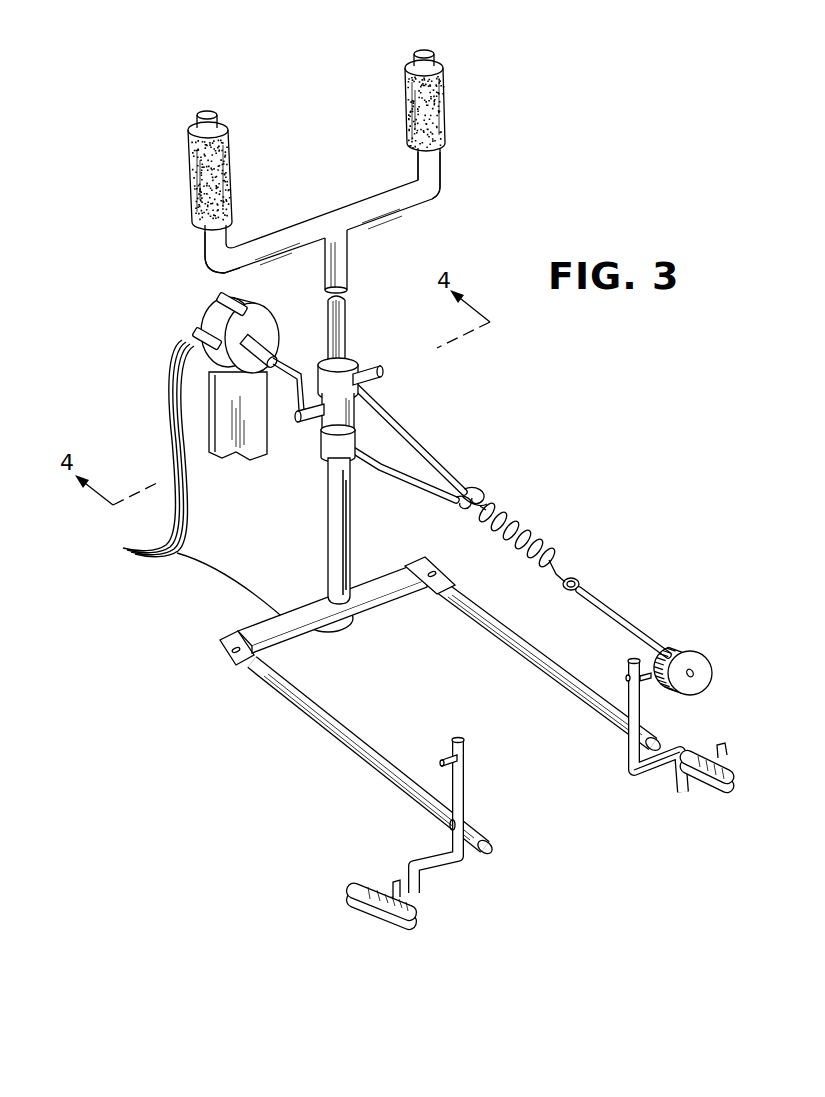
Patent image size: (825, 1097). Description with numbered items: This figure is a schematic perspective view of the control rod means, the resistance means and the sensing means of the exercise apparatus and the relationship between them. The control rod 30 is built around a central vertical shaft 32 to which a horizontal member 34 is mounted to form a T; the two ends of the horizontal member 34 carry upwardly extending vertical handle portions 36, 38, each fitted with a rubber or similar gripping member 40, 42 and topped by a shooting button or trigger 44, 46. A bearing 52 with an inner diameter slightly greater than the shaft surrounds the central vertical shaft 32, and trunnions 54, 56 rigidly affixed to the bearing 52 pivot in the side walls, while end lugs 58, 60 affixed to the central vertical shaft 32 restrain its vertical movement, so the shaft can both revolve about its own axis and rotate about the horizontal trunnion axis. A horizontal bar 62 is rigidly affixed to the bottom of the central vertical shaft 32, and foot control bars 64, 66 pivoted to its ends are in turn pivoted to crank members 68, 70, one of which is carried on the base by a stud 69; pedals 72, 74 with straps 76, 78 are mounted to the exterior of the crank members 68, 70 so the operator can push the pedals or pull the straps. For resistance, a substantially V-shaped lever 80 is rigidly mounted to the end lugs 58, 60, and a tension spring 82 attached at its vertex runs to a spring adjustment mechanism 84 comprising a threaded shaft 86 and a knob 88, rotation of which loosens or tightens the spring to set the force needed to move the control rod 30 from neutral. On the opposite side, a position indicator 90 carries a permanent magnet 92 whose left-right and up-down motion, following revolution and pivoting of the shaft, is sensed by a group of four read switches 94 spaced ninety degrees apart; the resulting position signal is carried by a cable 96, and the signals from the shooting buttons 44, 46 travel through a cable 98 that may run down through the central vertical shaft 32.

The control rod 30 is at (360, 238).
The central vertical shaft 32 is at (344, 323).
The horizontal member 34 is at (365, 213).
The vertical handle portion 36 is at (207, 244).
The vertical handle portion 38 is at (425, 168).
The gripping member 40 is at (190, 162).
The gripping member 42 is at (409, 108).
The shooting button 44 is at (215, 116).
The shooting button 46 is at (414, 57).
The bearing 52 is at (352, 426).
The trunnion 54 is at (318, 427).
The trunnion 56 is at (377, 375).
The end lug 58 is at (345, 372).
The end lug 60 is at (333, 450).
The horizontal bar 62 is at (297, 615).
The foot control bar 64 is at (316, 708).
The foot control bar 66 is at (510, 637).
The crank member 68 is at (434, 864).
The stud 69 is at (450, 760).
The crank member 70 is at (652, 776).
The pedal 72 is at (352, 888).
The pedal 74 is at (741, 771).
The strap 76 is at (393, 880).
The strap 78 is at (722, 747).
The V-shaped lever 80 is at (405, 425).
The tension spring 82 is at (512, 513).
The spring adjustment mechanism 84 is at (651, 636).
The threaded shaft 86 is at (590, 596).
The knob 88 is at (700, 652).
The position indicator 90 is at (292, 367).
The permanent magnet 92 is at (279, 363).
The read switches 94 is at (243, 304).
The cable 96 is at (174, 412).
The cable 98 is at (220, 580).